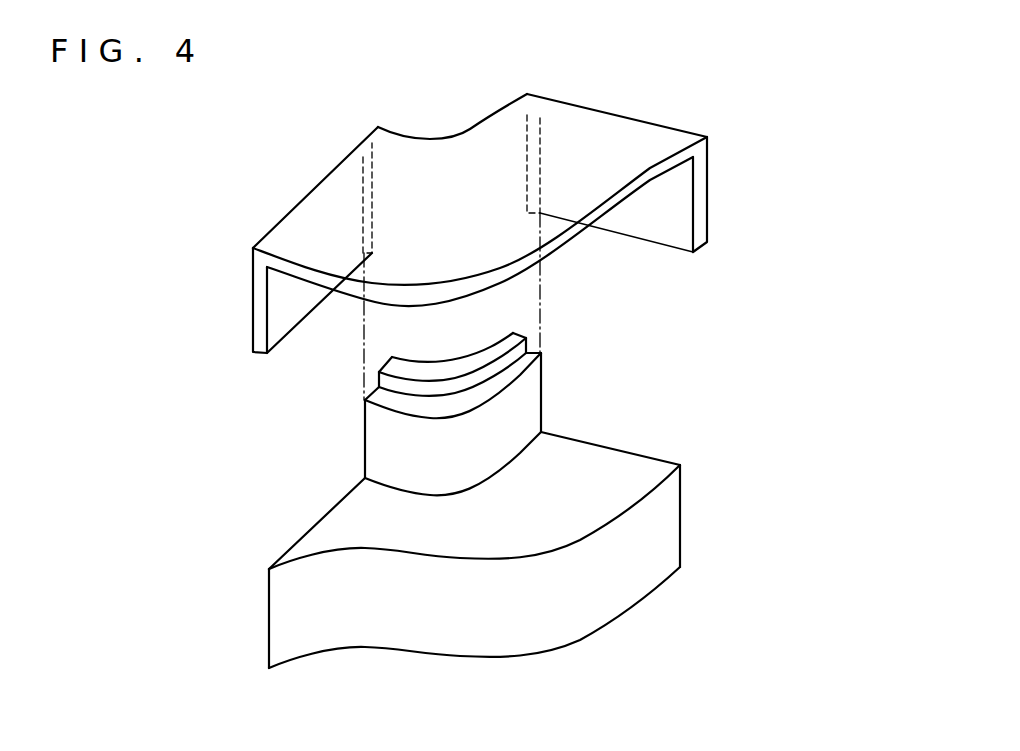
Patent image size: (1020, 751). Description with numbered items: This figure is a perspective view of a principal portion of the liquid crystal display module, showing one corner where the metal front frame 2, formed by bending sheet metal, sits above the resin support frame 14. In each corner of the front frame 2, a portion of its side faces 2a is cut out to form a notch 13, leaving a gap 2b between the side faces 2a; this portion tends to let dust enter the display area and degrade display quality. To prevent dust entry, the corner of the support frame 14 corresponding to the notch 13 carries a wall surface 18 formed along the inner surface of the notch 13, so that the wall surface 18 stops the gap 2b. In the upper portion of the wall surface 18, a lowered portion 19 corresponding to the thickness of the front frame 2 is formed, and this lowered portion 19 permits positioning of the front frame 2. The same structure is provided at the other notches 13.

The front frame 2 is at (578, 102).
The side faces 2a is at (285, 302).
The gap 2b is at (425, 187).
The notch 13 is at (448, 118).
The support frame 14 is at (612, 462).
The wall surface 18 is at (505, 425).
The lowered portion 19 is at (528, 343).